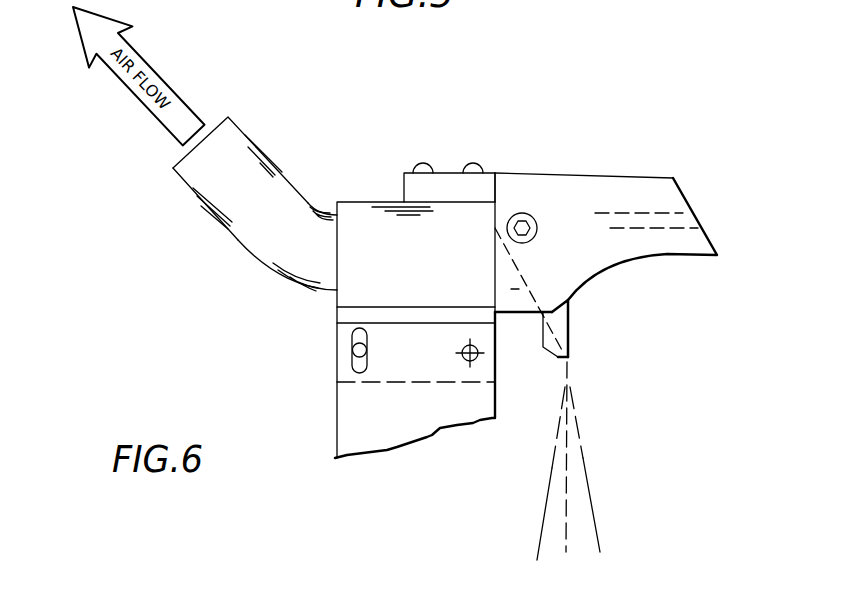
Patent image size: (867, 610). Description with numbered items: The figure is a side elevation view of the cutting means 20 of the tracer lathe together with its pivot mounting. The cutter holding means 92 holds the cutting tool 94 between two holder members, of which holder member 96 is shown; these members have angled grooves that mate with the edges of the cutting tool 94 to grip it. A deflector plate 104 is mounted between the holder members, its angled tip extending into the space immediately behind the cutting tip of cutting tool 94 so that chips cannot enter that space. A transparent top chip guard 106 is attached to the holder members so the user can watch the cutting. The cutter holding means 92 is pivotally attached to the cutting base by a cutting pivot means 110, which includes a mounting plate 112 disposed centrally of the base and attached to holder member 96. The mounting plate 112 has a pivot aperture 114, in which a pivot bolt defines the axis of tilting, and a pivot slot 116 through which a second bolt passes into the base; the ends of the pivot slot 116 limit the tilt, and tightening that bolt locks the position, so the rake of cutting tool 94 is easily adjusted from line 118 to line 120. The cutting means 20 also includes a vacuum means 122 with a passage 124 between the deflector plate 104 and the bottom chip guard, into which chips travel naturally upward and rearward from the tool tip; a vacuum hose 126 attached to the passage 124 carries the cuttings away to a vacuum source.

The cutting means 20 is at (588, 356).
The cutter holding means 92 is at (466, 155).
The cutting tool 94 is at (570, 320).
The holder member 96 is at (415, 183).
The deflector plate 104 is at (543, 314).
The top chip guard 106 is at (624, 168).
The cutting pivot means 110 is at (325, 380).
The mounting plate 112 is at (425, 427).
The pivot aperture 114 is at (476, 358).
The pivot slot 116 is at (352, 340).
The line 118 is at (543, 529).
The line 120 is at (592, 492).
The vacuum means 122 is at (306, 178).
The passage 124 is at (523, 283).
The vacuum hose 126 is at (240, 243).